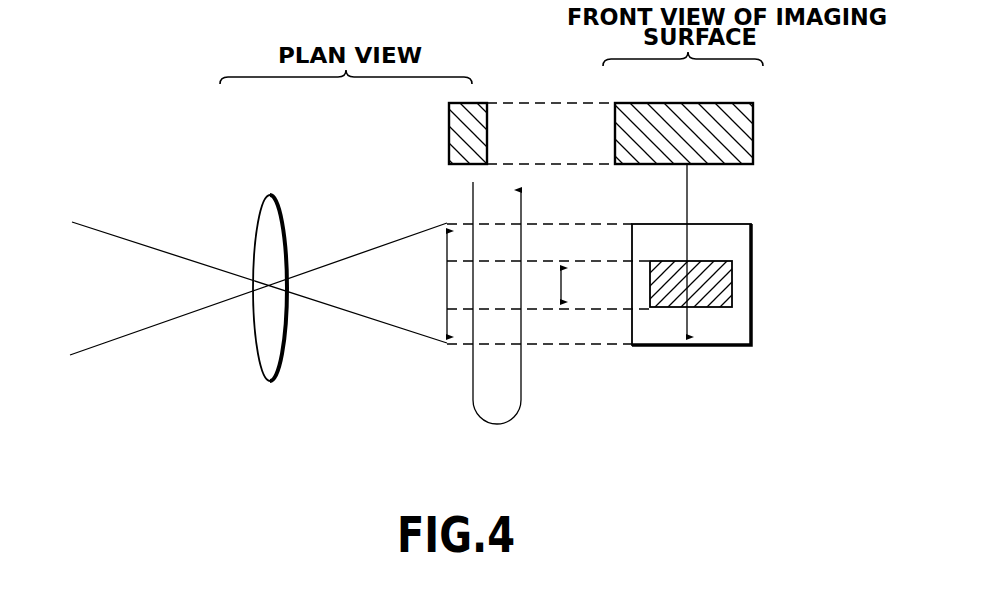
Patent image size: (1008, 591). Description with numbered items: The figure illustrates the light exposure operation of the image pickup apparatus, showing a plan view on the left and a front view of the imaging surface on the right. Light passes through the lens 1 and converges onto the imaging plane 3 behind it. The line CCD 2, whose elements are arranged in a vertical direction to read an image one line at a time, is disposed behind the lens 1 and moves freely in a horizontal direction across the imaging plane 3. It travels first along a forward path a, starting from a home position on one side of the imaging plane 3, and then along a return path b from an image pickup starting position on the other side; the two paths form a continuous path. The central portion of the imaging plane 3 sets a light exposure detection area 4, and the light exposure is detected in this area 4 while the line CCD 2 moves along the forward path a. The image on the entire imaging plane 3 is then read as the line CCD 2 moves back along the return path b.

The lens 1 is at (267, 222).
The line CCD 2 is at (615, 103).
The imaging plane 3 is at (447, 290).
The light exposure detection area 4 is at (672, 307).
The forward path a is at (473, 187).
The return path b is at (523, 282).